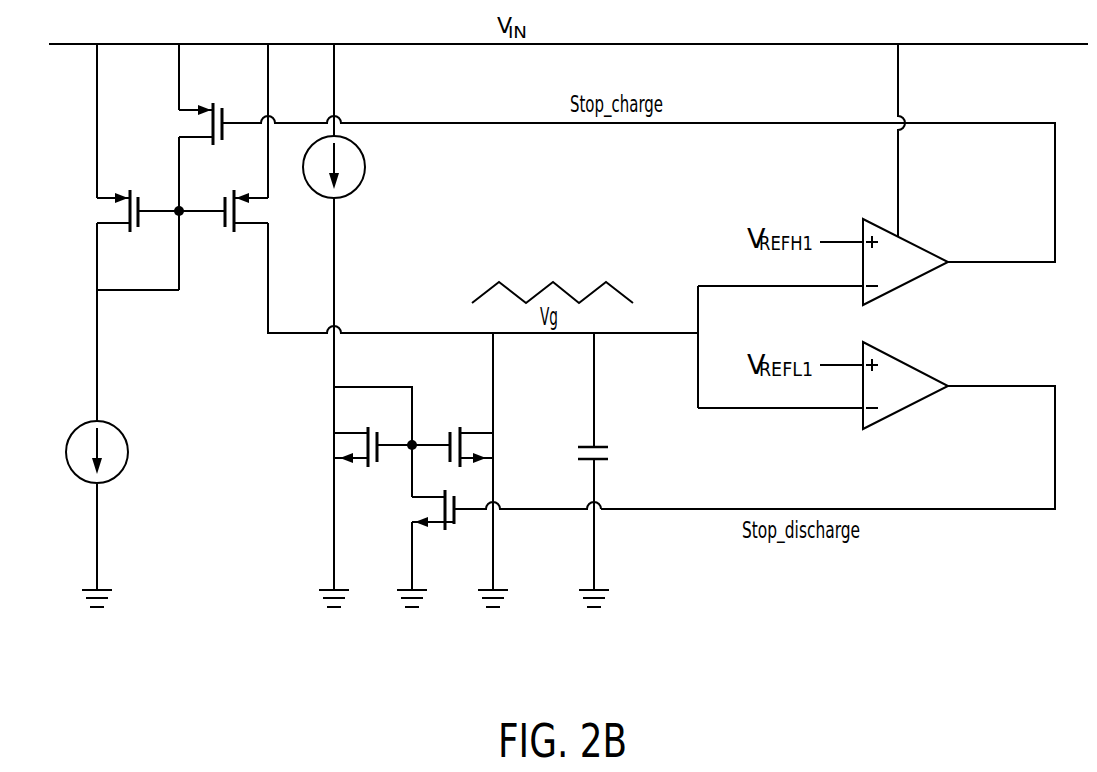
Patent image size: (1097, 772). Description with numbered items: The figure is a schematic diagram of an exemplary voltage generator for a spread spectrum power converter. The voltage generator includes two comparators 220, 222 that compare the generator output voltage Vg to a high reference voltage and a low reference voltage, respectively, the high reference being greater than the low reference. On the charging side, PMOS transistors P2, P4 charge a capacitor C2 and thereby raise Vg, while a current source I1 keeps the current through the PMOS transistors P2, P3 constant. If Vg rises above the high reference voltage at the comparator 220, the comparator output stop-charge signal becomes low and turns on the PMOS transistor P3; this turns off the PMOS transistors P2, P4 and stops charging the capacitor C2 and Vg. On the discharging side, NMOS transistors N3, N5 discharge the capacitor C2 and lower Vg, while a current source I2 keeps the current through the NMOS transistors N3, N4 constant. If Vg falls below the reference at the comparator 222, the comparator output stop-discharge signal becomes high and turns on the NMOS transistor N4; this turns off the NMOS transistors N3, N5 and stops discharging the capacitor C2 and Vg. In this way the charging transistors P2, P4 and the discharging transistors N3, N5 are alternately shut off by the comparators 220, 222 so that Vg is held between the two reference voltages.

The PMOS transistor P2 is at (144, 211).
The PMOS transistor P3 is at (185, 124).
The PMOS transistor P4 is at (261, 211).
The current source I1 is at (111, 452).
The current source I2 is at (348, 167).
The NMOS transistor N3 is at (355, 447).
The NMOS transistor N4 is at (420, 510).
The NMOS transistor N5 is at (468, 447).
The capacitor C2 is at (609, 455).
The comparator 220 is at (913, 243).
The comparator 222 is at (910, 366).